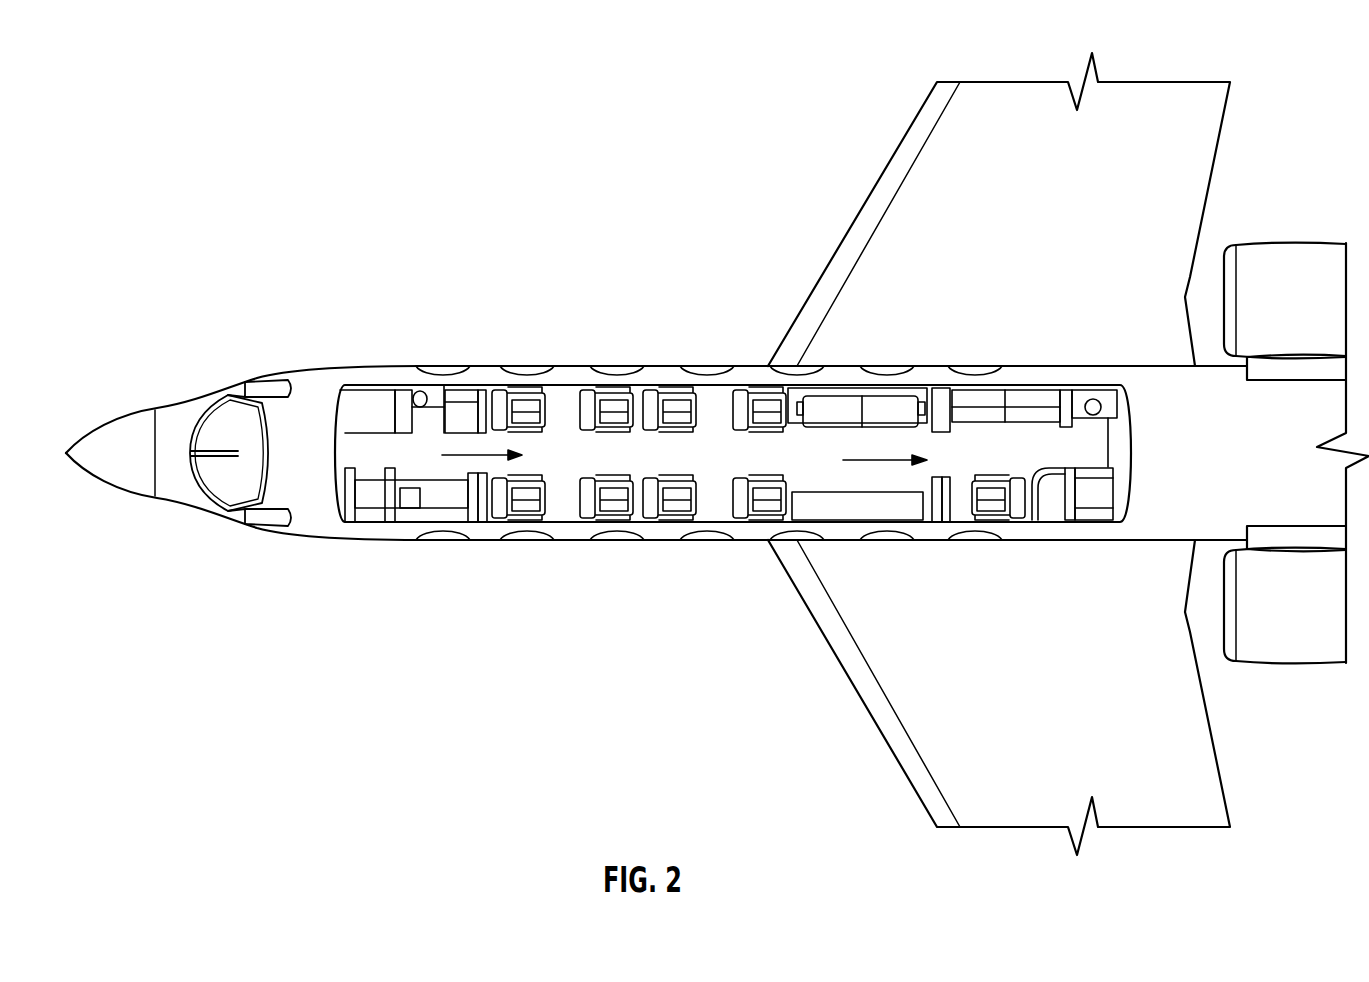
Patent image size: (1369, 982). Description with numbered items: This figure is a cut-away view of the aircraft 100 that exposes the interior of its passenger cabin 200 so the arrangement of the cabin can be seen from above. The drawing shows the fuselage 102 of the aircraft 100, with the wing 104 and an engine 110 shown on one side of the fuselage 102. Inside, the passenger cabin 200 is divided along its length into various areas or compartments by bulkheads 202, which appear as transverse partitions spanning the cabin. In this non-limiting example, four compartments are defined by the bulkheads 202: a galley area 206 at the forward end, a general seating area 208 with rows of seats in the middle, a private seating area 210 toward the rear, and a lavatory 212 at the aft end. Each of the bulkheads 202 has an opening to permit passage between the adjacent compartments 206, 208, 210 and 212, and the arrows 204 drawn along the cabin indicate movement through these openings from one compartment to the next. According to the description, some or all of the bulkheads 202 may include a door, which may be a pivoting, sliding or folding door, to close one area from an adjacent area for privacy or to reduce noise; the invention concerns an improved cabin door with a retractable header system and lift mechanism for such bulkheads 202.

The aircraft 100 is at (313, 388).
The fuselage 102 is at (566, 376).
The wing 104 is at (1135, 100).
The engine 110 is at (1292, 258).
The passenger cabin 200 is at (566, 462).
The bulkheads 202 is at (483, 505).
The airflow direction 204 is at (496, 455).
The galley area 206 is at (370, 460).
The general seating area 208 is at (716, 462).
The private seating area 210 is at (1046, 462).
The lavatory 212 is at (1101, 462).